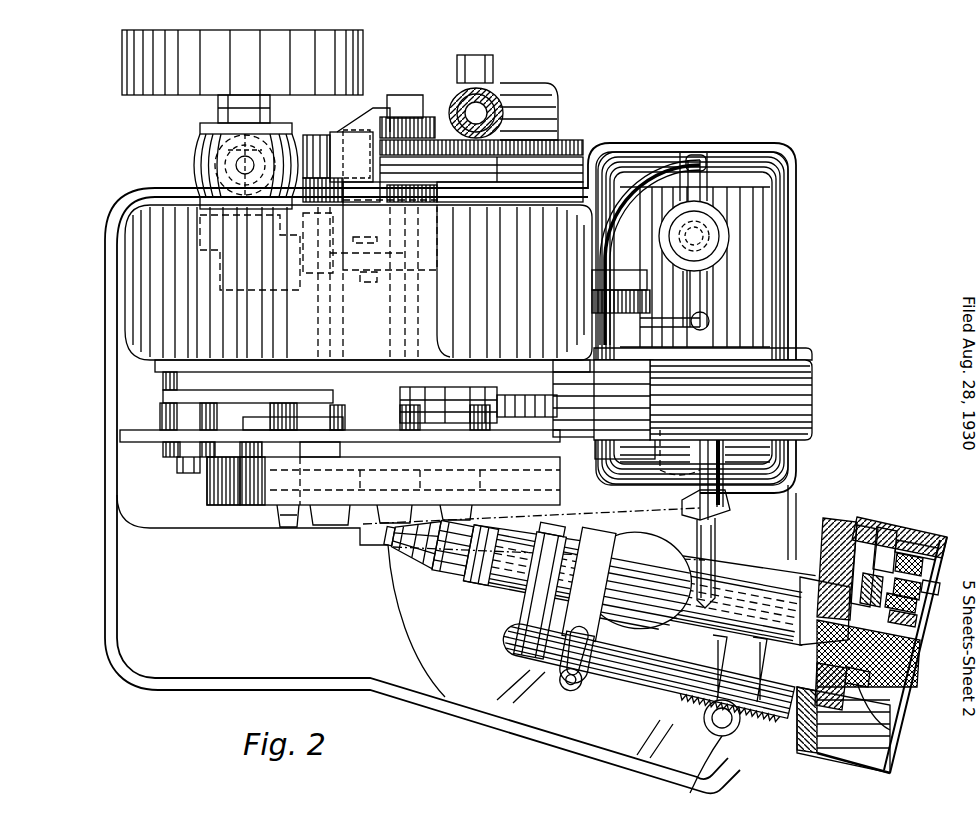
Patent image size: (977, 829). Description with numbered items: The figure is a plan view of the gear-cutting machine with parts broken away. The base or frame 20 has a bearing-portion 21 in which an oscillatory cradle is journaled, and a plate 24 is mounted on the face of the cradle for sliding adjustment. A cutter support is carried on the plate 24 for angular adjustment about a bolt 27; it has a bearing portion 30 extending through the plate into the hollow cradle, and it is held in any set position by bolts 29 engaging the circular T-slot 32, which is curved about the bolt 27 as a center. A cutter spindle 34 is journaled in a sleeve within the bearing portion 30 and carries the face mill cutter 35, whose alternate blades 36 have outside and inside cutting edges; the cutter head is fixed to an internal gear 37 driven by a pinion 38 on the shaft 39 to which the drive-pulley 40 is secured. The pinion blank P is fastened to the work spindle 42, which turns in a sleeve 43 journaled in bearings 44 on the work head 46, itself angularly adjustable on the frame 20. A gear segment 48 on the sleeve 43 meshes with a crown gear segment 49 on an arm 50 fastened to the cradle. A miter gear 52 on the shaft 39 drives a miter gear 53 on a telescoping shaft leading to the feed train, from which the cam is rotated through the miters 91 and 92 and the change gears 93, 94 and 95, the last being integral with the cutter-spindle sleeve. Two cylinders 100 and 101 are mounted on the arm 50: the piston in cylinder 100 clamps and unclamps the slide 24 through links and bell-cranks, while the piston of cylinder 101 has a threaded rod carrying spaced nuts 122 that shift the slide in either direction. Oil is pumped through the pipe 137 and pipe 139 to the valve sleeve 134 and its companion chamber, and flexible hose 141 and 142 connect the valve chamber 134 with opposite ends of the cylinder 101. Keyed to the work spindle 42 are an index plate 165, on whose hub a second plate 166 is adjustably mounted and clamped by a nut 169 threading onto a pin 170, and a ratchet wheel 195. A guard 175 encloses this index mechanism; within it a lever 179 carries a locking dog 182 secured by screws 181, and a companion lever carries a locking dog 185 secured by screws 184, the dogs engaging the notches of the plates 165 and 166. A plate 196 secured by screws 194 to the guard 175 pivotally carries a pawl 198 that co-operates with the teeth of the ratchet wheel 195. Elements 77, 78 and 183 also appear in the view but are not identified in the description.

The base or frame 20 is at (118, 555).
The bearing-portion 21 is at (146, 262).
The plate 24 is at (450, 410).
The bolt 27 is at (193, 468).
The bolts 29 is at (468, 425).
The bearing portion 30 is at (400, 332).
The circular T-slot 32 is at (385, 375).
The cutter spindle 34 is at (385, 300).
The face mill cutter 35 is at (342, 512).
The blades 36 is at (290, 517).
The internal gear 37 is at (223, 478).
The pinion 38 is at (248, 472).
The shaft 39 is at (255, 320).
The machine drive-pulley 40 is at (363, 52).
The work spindle 42 is at (837, 572).
The sleeve 43 is at (817, 584).
The bearings 44 is at (612, 540).
The work head 46 is at (630, 700).
The gear segment 48 is at (698, 532).
The crown gear segment 49 is at (702, 488).
The arm 50 is at (795, 355).
The miter gear 52 is at (212, 172).
The miter gear 53 is at (225, 150).
The plunger shaft 77 is at (640, 321).
The plunger guide block 78 is at (598, 283).
The miter gear 91 is at (490, 105).
The miter gear 92 is at (458, 98).
The change gear 93 is at (552, 124).
The change gear 94 is at (435, 160).
The change gear 95 is at (385, 135).
The cylinder 100 is at (795, 397).
The cylinder 101 is at (600, 452).
The nut 122 is at (528, 420).
The valve sleeve 134 is at (712, 230).
The pipe 137 is at (672, 352).
The pipe 139 is at (715, 292).
The flexible hose 141 is at (628, 200).
The flexible hose 142 is at (675, 168).
The index plate 165 is at (870, 720).
The second plate 166 is at (880, 690).
The nut 169 is at (917, 622).
The pin 170 is at (918, 606).
The guard 175 is at (897, 523).
The lever 179 is at (920, 550).
The screws 181 is at (880, 527).
The locking dog 182 is at (870, 520).
The spring 183 is at (922, 565).
The screws 184 is at (920, 588).
The locking dog 185 is at (925, 588).
The screws 194 is at (817, 675).
The ratchet wheel 195 is at (877, 740).
The plate 196 is at (866, 575).
The pawl 198 is at (855, 530).
The pinion blank P is at (410, 548).